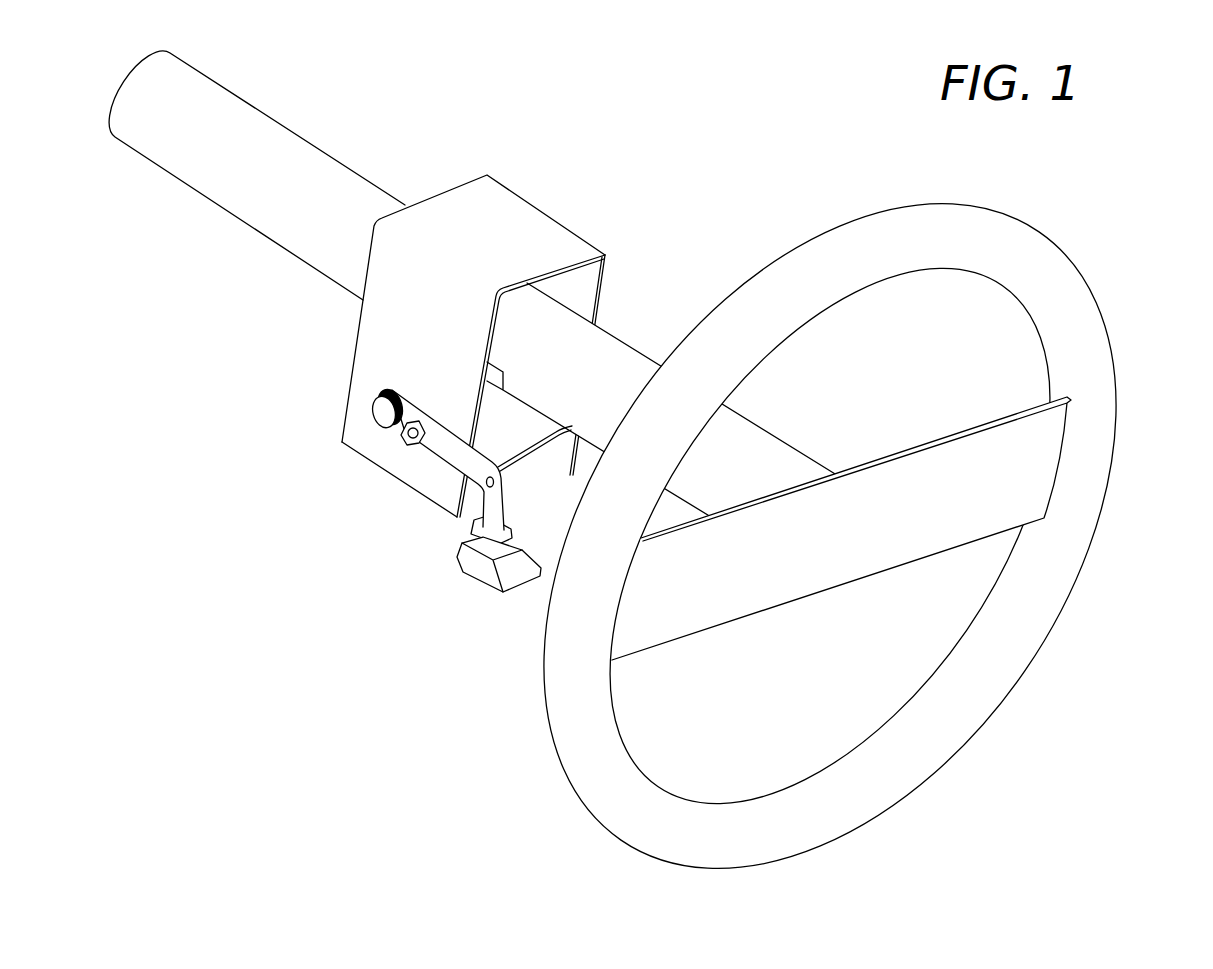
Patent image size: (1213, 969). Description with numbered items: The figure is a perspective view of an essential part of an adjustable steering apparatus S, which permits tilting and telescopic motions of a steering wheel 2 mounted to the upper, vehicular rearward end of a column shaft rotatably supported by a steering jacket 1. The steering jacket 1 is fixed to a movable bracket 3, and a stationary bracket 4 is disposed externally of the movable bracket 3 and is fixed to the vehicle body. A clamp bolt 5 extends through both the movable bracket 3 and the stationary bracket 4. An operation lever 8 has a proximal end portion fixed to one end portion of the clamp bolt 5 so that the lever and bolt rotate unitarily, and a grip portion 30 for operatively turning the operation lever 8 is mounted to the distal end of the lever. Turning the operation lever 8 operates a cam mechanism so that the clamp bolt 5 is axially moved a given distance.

The steering jacket 1 is at (290, 127).
The steering wheel 2 is at (1090, 318).
The movable bracket 3 is at (527, 463).
The stationary bracket 4 is at (591, 306).
The clamp bolt 5 is at (384, 412).
The operation lever 8 is at (437, 458).
The grip portion 30 is at (477, 570).
The adjustable steering apparatus S is at (716, 189).